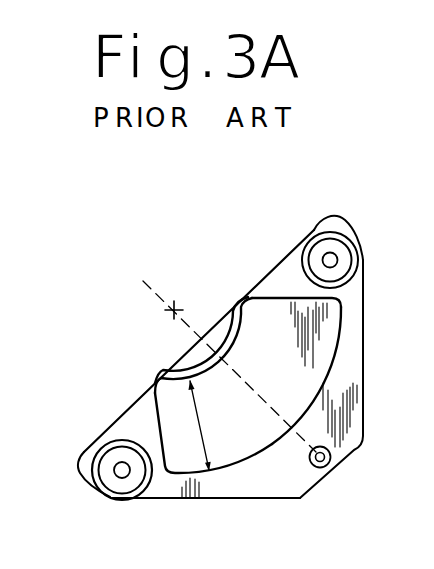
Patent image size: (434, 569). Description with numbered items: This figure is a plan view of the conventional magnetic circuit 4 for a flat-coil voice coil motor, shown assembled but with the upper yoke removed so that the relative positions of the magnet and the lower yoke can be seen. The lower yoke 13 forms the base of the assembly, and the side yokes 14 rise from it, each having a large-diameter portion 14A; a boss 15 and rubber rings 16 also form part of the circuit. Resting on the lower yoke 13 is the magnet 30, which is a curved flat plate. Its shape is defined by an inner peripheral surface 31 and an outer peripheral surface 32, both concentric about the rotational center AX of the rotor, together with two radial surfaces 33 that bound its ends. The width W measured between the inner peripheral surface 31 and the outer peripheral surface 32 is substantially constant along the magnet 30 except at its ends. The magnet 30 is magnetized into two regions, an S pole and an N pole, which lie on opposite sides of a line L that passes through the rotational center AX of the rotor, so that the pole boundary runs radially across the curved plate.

The magnetic circuit 4 is at (352, 222).
The lower yoke 13 is at (354, 373).
The side yokes 14 is at (118, 472).
The large-diameter portions of the side yokes 14A is at (97, 453).
The boss 15 is at (333, 467).
The rubber rings 16 is at (108, 438).
The magnet 30 is at (241, 466).
The inner peripheral surface 31 is at (200, 365).
The outer peripheral surface 32 is at (272, 445).
The radial surfaces 33 is at (277, 298).
The line L is at (220, 352).
The rotational center of the rotor AX is at (177, 306).
The width W is at (189, 425).
The N pole N is at (220, 425).
The S pole S is at (284, 350).